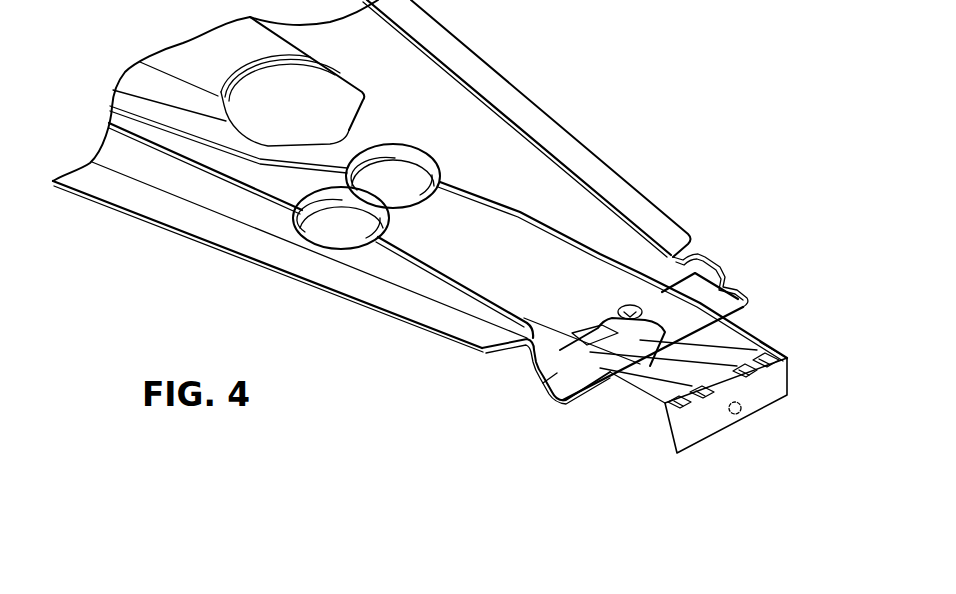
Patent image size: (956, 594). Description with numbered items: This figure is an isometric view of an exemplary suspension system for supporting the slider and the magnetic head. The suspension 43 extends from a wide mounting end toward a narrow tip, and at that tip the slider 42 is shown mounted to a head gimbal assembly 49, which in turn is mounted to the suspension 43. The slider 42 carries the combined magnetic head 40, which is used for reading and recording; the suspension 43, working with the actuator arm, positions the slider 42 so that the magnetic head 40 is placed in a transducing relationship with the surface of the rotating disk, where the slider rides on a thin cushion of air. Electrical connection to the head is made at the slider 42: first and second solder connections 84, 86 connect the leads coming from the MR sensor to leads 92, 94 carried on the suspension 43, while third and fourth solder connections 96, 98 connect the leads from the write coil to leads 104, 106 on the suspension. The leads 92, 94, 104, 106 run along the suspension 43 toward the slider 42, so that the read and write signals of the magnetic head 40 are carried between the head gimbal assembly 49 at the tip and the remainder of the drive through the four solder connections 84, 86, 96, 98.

The suspension 43 is at (544, 108).
The lead 94 is at (630, 262).
The lead 104 is at (460, 274).
The lead 106 is at (520, 213).
The head gimbal assembly 49 is at (618, 328).
The lead 92 is at (427, 267).
The slider 42 is at (770, 395).
The magnetic head 40 is at (746, 424).
The first solder connection 84 is at (662, 408).
The second solder connection 86 is at (772, 350).
The third solder connection 96 is at (708, 398).
The fourth solder connection 98 is at (753, 377).